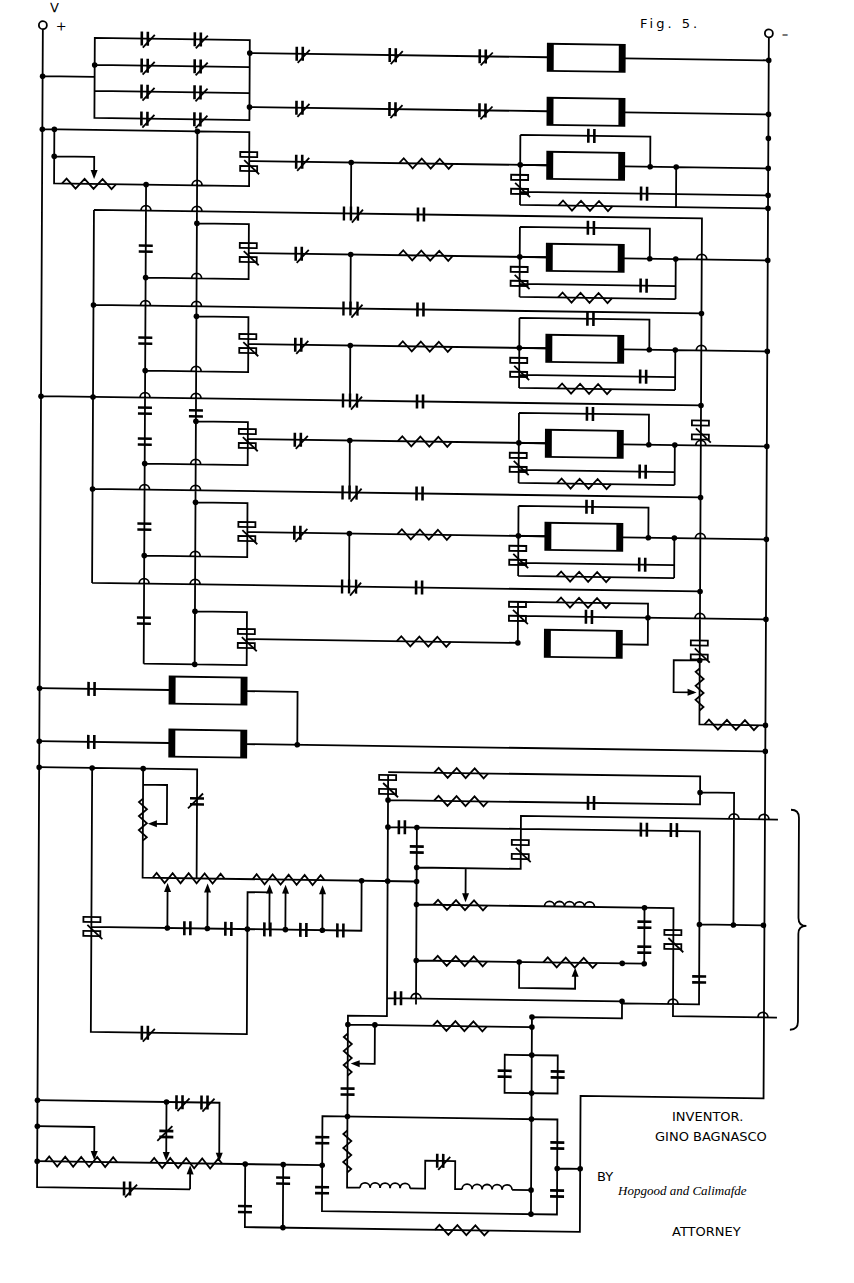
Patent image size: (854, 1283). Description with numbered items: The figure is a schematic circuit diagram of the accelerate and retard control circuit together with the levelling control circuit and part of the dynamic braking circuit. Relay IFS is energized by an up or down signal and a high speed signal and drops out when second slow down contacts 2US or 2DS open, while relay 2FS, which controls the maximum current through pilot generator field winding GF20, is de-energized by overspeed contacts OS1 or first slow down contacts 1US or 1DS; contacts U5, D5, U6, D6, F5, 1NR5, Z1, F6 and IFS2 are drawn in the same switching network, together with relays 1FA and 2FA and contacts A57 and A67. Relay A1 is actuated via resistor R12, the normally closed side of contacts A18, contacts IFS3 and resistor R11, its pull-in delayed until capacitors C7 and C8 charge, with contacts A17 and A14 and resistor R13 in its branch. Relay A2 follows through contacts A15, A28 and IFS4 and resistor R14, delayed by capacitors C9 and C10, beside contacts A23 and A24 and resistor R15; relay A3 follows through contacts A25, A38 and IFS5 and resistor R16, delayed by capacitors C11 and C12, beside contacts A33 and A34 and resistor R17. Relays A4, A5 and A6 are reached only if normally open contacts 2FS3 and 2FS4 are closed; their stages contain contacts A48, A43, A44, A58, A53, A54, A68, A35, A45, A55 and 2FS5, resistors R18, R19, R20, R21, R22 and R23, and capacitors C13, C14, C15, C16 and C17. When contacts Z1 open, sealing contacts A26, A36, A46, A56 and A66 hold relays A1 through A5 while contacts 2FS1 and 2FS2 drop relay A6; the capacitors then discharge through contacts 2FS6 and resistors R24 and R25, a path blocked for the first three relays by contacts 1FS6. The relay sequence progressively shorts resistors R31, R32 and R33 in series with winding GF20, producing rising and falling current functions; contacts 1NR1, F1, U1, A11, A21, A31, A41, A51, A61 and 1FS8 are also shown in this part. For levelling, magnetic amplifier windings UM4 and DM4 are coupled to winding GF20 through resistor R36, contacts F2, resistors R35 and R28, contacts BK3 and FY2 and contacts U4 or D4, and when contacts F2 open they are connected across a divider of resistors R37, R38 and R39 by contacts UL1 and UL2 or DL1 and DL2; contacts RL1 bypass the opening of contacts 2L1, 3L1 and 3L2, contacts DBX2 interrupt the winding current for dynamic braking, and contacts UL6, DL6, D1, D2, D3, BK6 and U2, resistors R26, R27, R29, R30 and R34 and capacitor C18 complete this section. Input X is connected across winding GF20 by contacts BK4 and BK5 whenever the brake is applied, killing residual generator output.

The up switch contact 2US is at (141, 31).
The up relay contact U5 is at (199, 32).
The down switch contact 2DS is at (127, 60).
The down relay contact D5 is at (213, 62).
The up switch contact 1US is at (127, 87).
The up relay contact U6 is at (215, 88).
The down switch contact 1DS is at (126, 114).
The down relay contact D6 is at (212, 115).
The relay contact F5 is at (300, 48).
The relay contact 1NR5 is at (387, 48).
The relay contact Z1 is at (482, 47).
The floor selector relay IFS is at (586, 58).
The relay contact F6 is at (299, 102).
The relay contact IFS2 is at (386, 102).
The relay contact OS1 is at (482, 101).
The floor selector relay 2FS is at (585, 112).
The potentiometer R12 is at (95, 174).
The relay contact A18 is at (231, 153).
The relay contact IFS3 is at (296, 155).
The resistor R11 is at (426, 154).
The relay contact A17 is at (497, 183).
The relay A1 is at (585, 166).
The capacitor C7 is at (617, 131).
The capacitor C8 is at (662, 189).
The resistor R13 is at (617, 219).
The relay contact A26 is at (329, 207).
The relay contact A14 is at (440, 207).
The relay contact A15 is at (127, 239).
The relay contact A28 is at (230, 244).
The relay contact IFS4 is at (298, 247).
The resistor R14 is at (426, 246).
The relay contact A23 is at (497, 280).
The relay A2 is at (585, 258).
The capacitor C9 is at (630, 238).
The capacitor C10 is at (677, 287).
The resistor R15 is at (542, 307).
The relay contact A24 is at (423, 300).
The relay contact A36 is at (343, 316).
The relay contact A25 is at (126, 331).
The relay contact A38 is at (229, 335).
The relay contact IFS5 is at (293, 338).
The resistor R16 is at (425, 337).
The relay contact A33 is at (494, 370).
The relay A3 is at (584, 349).
The capacitor C11 is at (634, 323).
The capacitor C12 is at (673, 378).
The resistor R17 is at (539, 395).
The relay contact A34 is at (423, 391).
The relay contact A46 is at (346, 409).
The relay contact 2FS1 is at (122, 405).
The relay contact 2FS2 is at (218, 408).
The relay contact A48 is at (229, 435).
The relay contact 2FS3 is at (292, 432).
The resistor R18 is at (425, 432).
The relay contact A43 is at (494, 465).
The relay A4 is at (584, 444).
The capacitor C13 is at (632, 417).
The relay contact 1FS6 is at (719, 429).
The capacitor C14 is at (647, 471).
The resistor R19 is at (541, 489).
The relay contact A44 is at (423, 482).
The relay contact A56 is at (328, 486).
The relay contact A35 is at (126, 457).
The relay contact A45 is at (125, 516).
The relay contact A58 is at (228, 525).
The relay contact 2FS4 is at (293, 525).
The resistor R20 is at (424, 525).
The relay contact A53 is at (493, 559).
The relay A5 is at (583, 537).
The capacitor C15 is at (631, 511).
The capacitor C16 is at (646, 563).
The resistor R21 is at (540, 582).
The relay contact A54 is at (422, 575).
The relay contact A66 is at (325, 579).
The relay contact A55 is at (122, 609).
The relay contact A68 is at (267, 632).
The resistor R23 is at (424, 634).
The relay contact 2FS5 is at (495, 612).
The resistor R22 is at (618, 606).
The capacitor C17 is at (631, 630).
The relay A6 is at (583, 644).
The relay contact 2FS6 is at (719, 650).
The potentiometer R24 is at (717, 689).
The resistor R25 is at (731, 717).
The relay contact A57 is at (89, 680).
The relay 1FA is at (207, 691).
The relay contact A67 is at (88, 734).
The relay 2FA is at (207, 744).
The relay contact 1NR1 is at (214, 795).
The potentiometer R31 is at (120, 819).
The tapped resistor R32 is at (189, 867).
The tapped resistor R33 is at (289, 868).
The relay contact F1 is at (368, 783).
The relay contact U1 is at (408, 817).
The relay contact A11 is at (72, 919).
The relay contact A21 is at (180, 918).
The relay contact A31 is at (221, 919).
The relay contact A41 is at (259, 919).
The relay contact A51 is at (297, 920).
The relay contact A61 is at (335, 920).
The relay contact 1FS8 is at (133, 1023).
The relay contact 3L1 is at (160, 1090).
The relay contact 2L1 is at (223, 1090).
The relay contact 3L2 is at (132, 1122).
The resistor R37 is at (84, 1150).
The resistor R38 is at (186, 1152).
The relay contact RL1 is at (115, 1202).
The relay contact UL6 is at (218, 1206).
The relay contact DL6 is at (267, 1188).
The relay contact UL1 is at (293, 1131).
The relay contact DL1 is at (305, 1203).
The resistor R36 is at (361, 1151).
The relay contact DBX2 is at (428, 1154).
The relay coil UM4 is at (385, 1200).
The relay coil DM4 is at (487, 1201).
The relay contact DL2 is at (521, 1135).
The relay contact UL2 is at (522, 1182).
The resistor R39 is at (437, 1236).
The relay contact D1 is at (394, 990).
The potentiometer R35 is at (315, 1054).
The relay contact F2 is at (325, 1091).
The resistor R34 is at (460, 1018).
The relay contact U4 is at (482, 1071).
The relay contact D4 is at (569, 1068).
The resistor R26 is at (461, 765).
The resistor R27 is at (461, 794).
The capacitor C18 is at (607, 798).
The relay contact BK6 is at (437, 847).
The relay contact BK4 is at (538, 851).
The relay contact D2 is at (621, 839).
The relay contact D3 is at (660, 839).
The resistor R28 is at (469, 898).
The relay coil GF20 is at (570, 891).
The relay contact BK3 is at (620, 919).
The relay contact FY2 is at (620, 946).
The relay contact BK5 is at (689, 940).
The relay contact U2 is at (709, 980).
The resistor R29 is at (460, 953).
The potentiometer R30 is at (566, 954).
The circuit section X is at (805, 928).